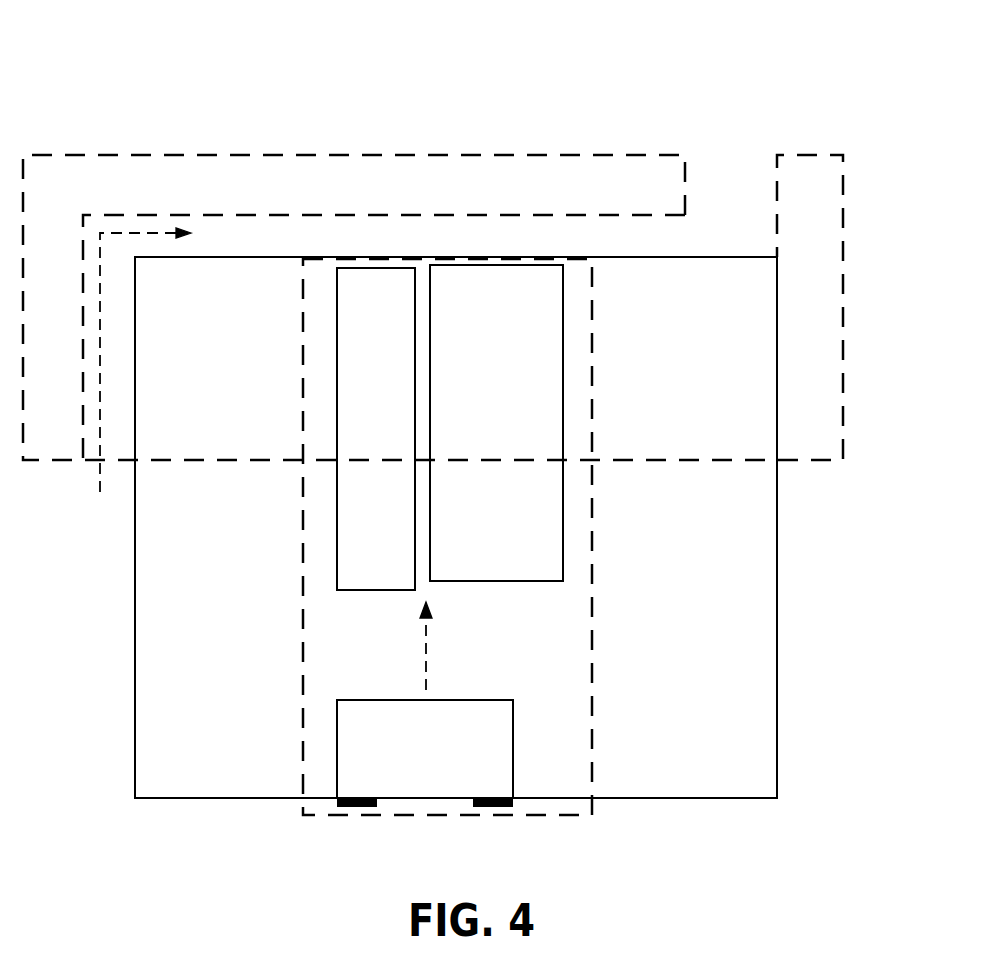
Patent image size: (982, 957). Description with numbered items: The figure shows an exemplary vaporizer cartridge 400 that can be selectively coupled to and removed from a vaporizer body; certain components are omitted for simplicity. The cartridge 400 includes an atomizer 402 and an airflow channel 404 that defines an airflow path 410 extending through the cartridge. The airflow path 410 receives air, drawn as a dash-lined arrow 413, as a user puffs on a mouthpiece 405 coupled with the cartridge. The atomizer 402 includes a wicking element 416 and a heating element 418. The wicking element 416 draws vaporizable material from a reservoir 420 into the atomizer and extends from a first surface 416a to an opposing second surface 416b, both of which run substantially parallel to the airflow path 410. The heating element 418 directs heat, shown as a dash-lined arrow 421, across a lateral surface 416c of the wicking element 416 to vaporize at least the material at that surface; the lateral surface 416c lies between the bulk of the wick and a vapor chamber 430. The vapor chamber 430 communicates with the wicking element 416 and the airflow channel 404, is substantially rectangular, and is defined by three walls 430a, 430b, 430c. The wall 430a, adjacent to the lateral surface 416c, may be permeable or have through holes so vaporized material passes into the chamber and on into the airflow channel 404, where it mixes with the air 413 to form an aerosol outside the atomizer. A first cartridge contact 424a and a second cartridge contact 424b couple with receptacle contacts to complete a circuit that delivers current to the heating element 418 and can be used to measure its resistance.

The vaporizer cartridge 400 is at (772, 74).
The atomizer 402 is at (592, 366).
The airflow channel 404 is at (246, 240).
The mouthpiece 405 is at (80, 153).
The airflow path 410 is at (459, 247).
The air 413 is at (138, 232).
The wicking element 416 is at (394, 429).
The first surface 416a is at (356, 270).
The second surface 416b is at (352, 592).
The lateral surface 416c is at (413, 507).
The heating element 418 is at (447, 760).
The reservoir 420 is at (233, 601).
The heat 421 is at (440, 653).
The first cartridge contact 424a is at (353, 808).
The second cartridge contact 424b is at (497, 808).
The vapor chamber 430 is at (512, 429).
The wall 430a is at (430, 473).
The wall 430b is at (500, 580).
The wall 430c is at (562, 340).